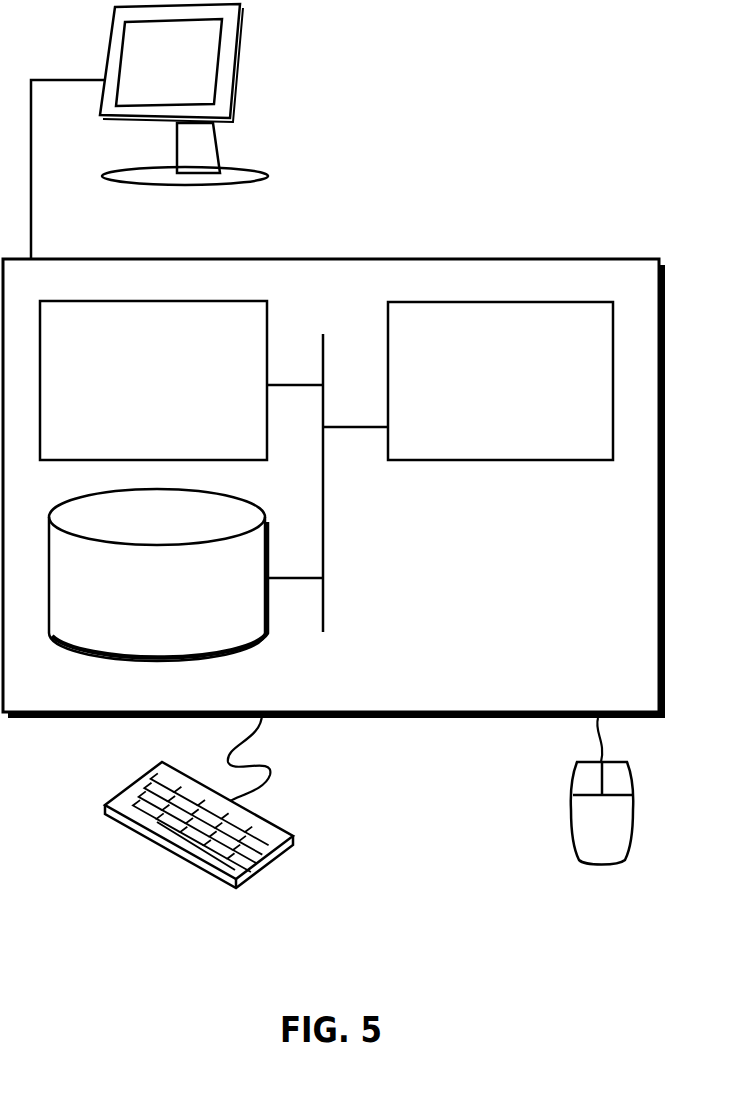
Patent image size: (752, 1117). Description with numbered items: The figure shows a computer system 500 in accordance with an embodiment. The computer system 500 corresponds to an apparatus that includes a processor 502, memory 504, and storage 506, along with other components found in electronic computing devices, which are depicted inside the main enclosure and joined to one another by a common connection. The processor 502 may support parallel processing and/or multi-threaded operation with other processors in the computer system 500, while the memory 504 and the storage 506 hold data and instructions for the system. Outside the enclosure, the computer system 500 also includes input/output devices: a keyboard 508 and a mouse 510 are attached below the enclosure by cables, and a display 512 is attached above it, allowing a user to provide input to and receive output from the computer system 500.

The computer system 500 is at (377, 237).
The processor 502 is at (525, 394).
The memory 504 is at (175, 394).
The storage 506 is at (182, 604).
The keyboard 508 is at (123, 825).
The mouse 510 is at (622, 834).
The display 512 is at (149, 132).